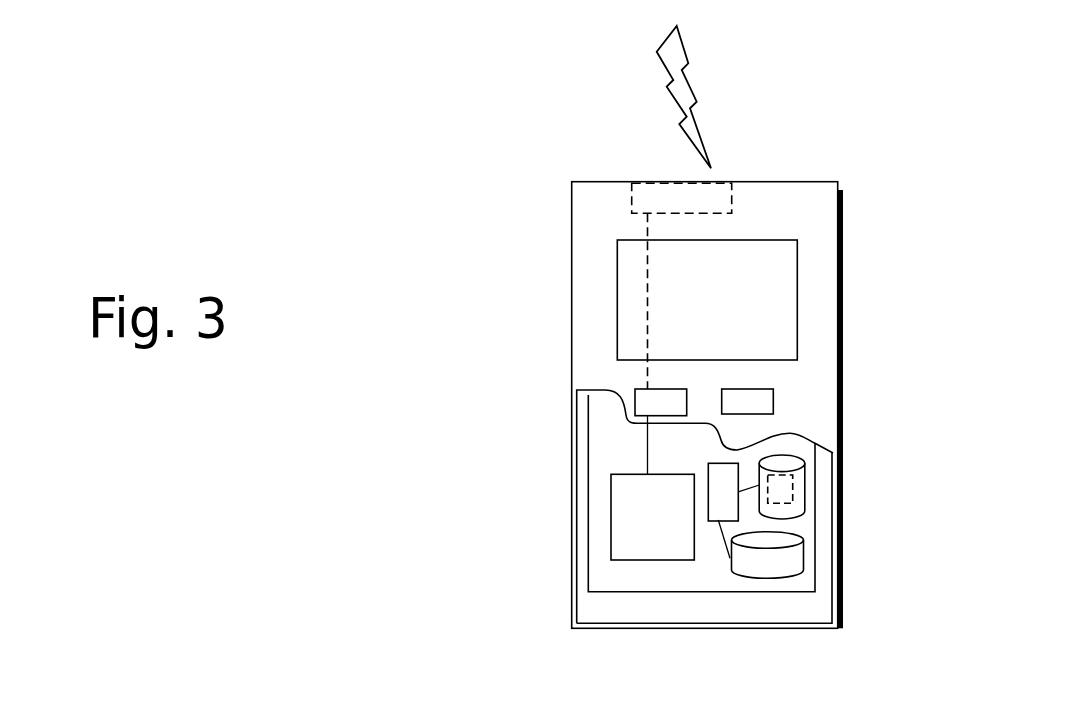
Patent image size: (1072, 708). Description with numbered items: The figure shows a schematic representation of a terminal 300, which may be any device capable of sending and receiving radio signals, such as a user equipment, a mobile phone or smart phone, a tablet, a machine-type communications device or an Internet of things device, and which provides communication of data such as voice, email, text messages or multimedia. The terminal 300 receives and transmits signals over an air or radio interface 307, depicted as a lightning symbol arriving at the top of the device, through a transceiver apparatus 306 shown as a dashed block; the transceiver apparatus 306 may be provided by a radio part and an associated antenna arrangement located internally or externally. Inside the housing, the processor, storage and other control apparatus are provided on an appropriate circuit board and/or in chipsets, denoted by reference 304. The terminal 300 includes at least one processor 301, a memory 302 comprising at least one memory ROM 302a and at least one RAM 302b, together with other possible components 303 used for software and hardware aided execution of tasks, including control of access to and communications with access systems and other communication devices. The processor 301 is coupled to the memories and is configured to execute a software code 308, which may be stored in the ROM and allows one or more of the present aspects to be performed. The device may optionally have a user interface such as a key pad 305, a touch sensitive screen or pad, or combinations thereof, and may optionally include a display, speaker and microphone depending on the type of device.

The terminal 300 is at (572, 218).
The processor 301 is at (724, 478).
The memory 302 is at (610, 575).
The memory ROM 302a is at (807, 491).
The RAM 302b is at (773, 553).
The other possible components 303 is at (633, 400).
The circuit board and/or chipsets 304 is at (617, 502).
The key pad 305 is at (632, 287).
The transceiver apparatus 306 is at (722, 193).
The air or radio interface 307 is at (712, 117).
The software code 308 is at (777, 488).